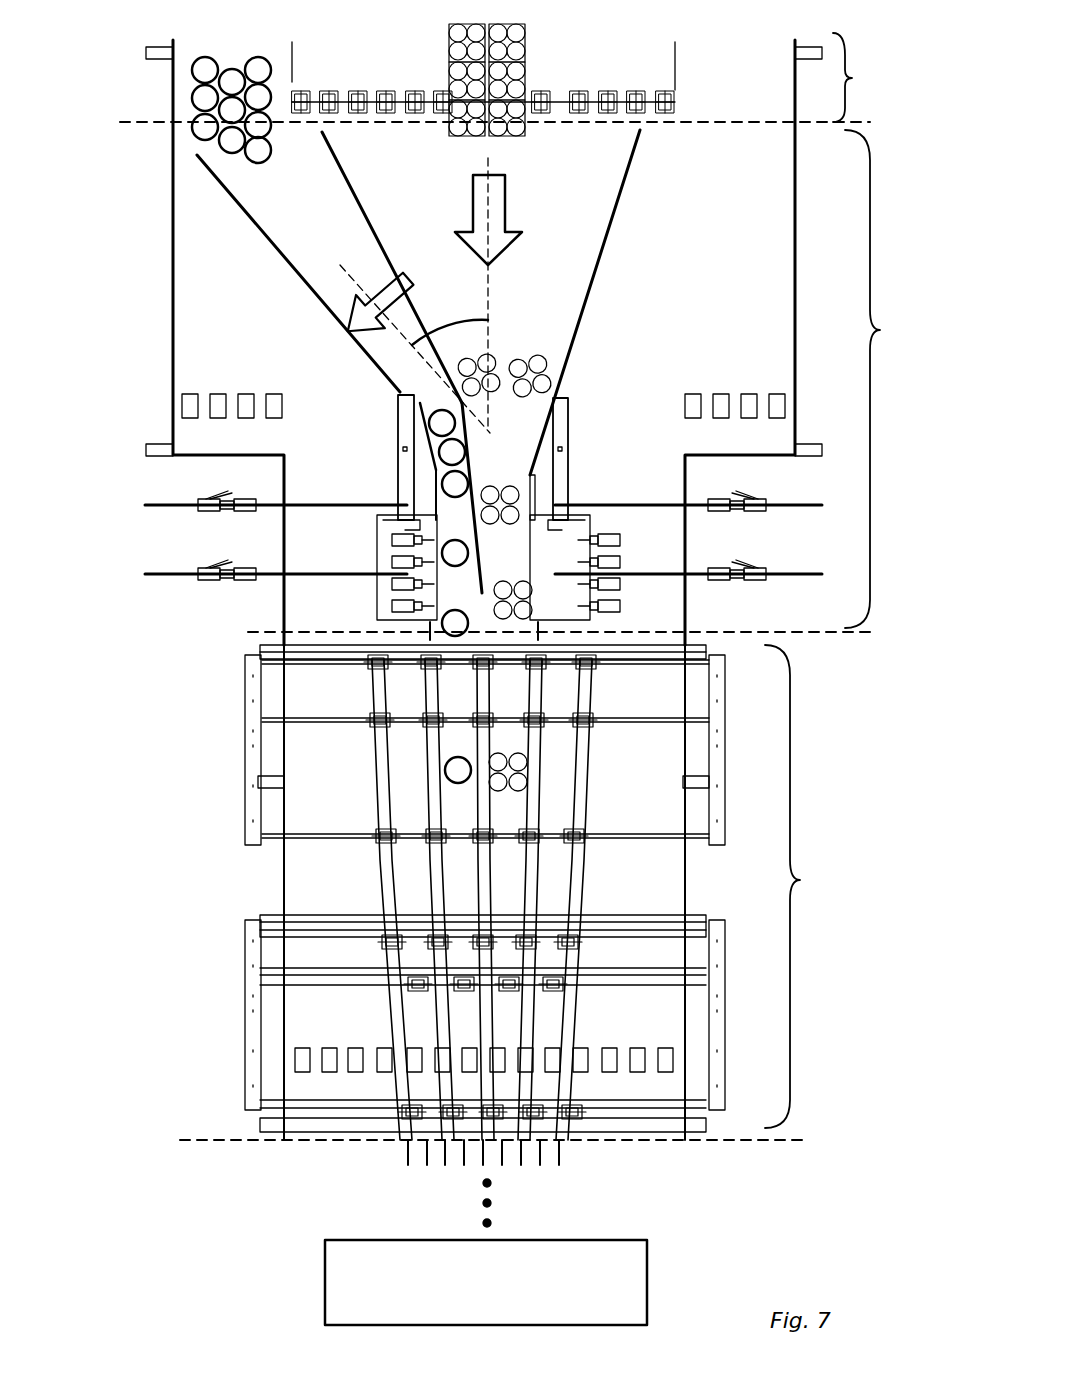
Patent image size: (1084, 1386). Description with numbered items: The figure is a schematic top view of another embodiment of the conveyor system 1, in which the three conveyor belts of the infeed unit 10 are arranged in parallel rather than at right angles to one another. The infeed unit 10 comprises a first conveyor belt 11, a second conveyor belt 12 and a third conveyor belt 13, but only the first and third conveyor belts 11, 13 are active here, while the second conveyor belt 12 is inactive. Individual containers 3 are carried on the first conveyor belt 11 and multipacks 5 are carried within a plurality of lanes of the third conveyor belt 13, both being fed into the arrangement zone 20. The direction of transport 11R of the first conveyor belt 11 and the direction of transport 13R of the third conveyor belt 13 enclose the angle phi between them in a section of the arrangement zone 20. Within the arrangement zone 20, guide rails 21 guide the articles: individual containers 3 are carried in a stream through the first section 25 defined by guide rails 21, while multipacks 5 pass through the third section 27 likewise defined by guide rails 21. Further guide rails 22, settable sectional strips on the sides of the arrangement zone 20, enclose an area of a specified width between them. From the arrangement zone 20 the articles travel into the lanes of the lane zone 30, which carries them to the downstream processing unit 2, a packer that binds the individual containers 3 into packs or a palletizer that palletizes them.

The conveyor system 1 is at (102, 543).
The downstream processing unit 2 is at (325, 1273).
The individual containers 3 is at (262, 62).
The multipacks 5 is at (530, 57).
The infeed unit 10 is at (852, 75).
The first conveyor belt 11 is at (232, 58).
The second conveyor belt 12 is at (745, 70).
The third conveyor belt 13 is at (483, 77).
The arrangement zone 20 is at (880, 425).
The guide rails 21 is at (326, 306).
The further guide rails 22 is at (570, 475).
The first section 25 is at (294, 190).
The third section 27 is at (549, 180).
The lane zone 30 is at (790, 1000).
The direction of transport of first conveyor belt 11R is at (330, 265).
The direction of transport of third conveyor belt 13R is at (462, 203).